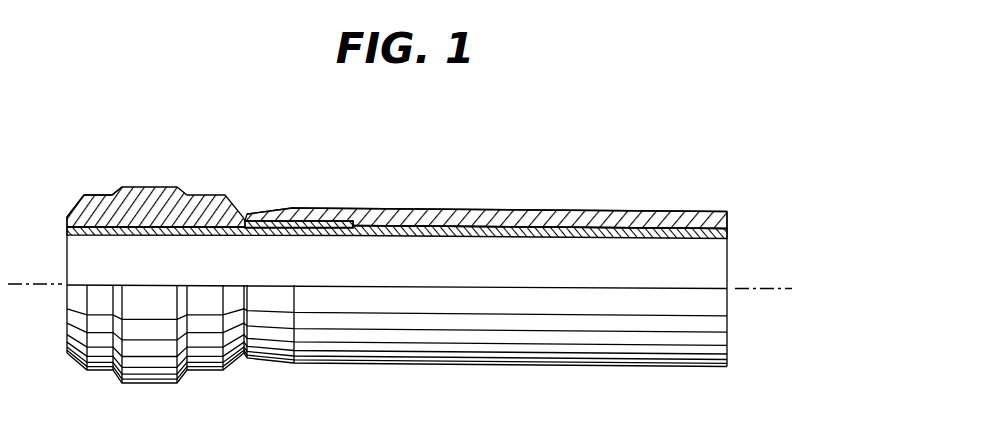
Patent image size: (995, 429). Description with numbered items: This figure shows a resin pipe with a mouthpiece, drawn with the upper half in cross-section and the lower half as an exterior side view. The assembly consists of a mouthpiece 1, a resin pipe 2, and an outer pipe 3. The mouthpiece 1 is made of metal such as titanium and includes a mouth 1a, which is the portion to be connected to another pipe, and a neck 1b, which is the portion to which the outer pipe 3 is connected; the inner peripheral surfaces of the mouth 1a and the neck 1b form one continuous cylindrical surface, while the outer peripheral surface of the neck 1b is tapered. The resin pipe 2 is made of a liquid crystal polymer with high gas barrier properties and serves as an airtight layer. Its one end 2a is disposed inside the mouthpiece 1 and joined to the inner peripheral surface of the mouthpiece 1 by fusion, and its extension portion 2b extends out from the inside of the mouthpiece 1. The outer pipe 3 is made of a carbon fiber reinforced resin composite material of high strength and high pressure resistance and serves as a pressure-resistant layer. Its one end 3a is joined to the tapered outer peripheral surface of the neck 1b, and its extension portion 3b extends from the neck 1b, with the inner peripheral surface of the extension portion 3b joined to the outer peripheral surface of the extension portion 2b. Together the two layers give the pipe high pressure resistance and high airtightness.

The mouthpiece 1 is at (158, 186).
The mouth 1a is at (132, 205).
The neck 1b is at (279, 223).
The resin pipe 2 is at (729, 234).
The one end of the resin pipe 2a is at (168, 237).
The extension portion of the resin pipe 2b is at (485, 230).
The outer pipe 3 is at (729, 214).
The one end of the outer pipe 3a is at (323, 213).
The extension portion of the outer pipe 3b is at (486, 221).